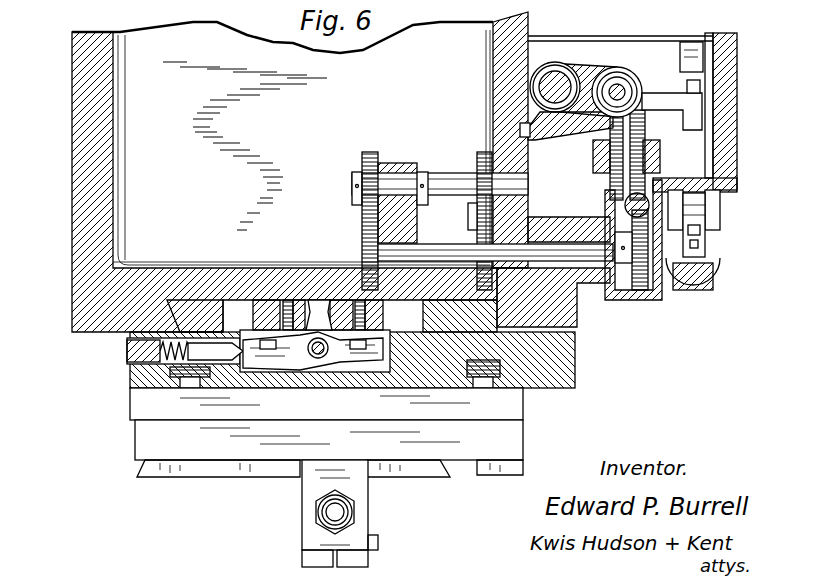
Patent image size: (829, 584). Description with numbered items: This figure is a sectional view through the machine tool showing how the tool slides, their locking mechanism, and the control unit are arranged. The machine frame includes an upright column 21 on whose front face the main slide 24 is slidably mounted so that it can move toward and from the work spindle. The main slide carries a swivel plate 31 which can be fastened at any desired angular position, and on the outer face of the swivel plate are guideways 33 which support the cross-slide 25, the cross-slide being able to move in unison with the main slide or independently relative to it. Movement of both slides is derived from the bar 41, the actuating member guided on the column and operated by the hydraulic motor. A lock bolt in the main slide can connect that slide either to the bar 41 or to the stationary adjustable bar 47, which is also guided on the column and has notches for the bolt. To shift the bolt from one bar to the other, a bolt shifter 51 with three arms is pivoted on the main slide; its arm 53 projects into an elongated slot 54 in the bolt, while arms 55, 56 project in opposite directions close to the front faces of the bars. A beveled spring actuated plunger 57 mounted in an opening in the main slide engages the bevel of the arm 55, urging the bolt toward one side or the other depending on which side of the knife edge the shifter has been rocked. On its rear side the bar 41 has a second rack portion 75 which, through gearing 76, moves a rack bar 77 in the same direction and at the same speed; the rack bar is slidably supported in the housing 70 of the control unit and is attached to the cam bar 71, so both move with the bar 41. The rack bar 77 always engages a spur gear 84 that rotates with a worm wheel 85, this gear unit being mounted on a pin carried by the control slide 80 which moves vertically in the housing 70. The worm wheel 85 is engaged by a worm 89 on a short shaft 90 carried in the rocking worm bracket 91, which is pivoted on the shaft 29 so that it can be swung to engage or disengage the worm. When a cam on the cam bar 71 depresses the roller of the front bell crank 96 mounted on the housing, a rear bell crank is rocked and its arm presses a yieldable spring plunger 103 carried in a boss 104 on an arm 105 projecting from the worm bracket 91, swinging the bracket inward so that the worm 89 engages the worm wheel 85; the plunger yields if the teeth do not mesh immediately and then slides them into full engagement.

The upright column 21 is at (148, 280).
The main slide 24 is at (520, 352).
The cross-slide 25 is at (245, 448).
The shaft 29 is at (555, 78).
The swivel plate 31 is at (510, 396).
The guideways 33 is at (525, 428).
The bar 41 is at (440, 270).
The adjustable bar 47 is at (264, 300).
The bolt shifter 51 is at (322, 360).
The arm 53 is at (315, 305).
The elongated slot 54 is at (340, 300).
The arm 55 is at (277, 372).
The arm 56 is at (375, 370).
The spring actuated plunger 57 is at (185, 351).
The housing 70 is at (735, 60).
The cam bar 71 is at (712, 280).
The rack portion 75 is at (415, 264).
The gearing 76 is at (362, 222).
The rack bar 77 is at (625, 210).
The control slide 80 is at (600, 166).
The spur gear 84 is at (645, 128).
The worm wheel 85 is at (610, 125).
The worm 89 is at (625, 72).
The short shaft 90 is at (616, 82).
The worm bracket 91 is at (590, 62).
The front bell crank 96 is at (712, 232).
The yieldable plunger 103 is at (700, 85).
The boss 104 is at (704, 118).
The arm 105 is at (664, 100).